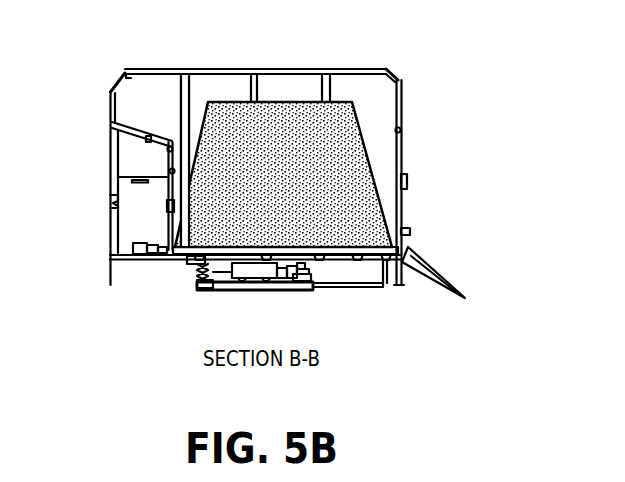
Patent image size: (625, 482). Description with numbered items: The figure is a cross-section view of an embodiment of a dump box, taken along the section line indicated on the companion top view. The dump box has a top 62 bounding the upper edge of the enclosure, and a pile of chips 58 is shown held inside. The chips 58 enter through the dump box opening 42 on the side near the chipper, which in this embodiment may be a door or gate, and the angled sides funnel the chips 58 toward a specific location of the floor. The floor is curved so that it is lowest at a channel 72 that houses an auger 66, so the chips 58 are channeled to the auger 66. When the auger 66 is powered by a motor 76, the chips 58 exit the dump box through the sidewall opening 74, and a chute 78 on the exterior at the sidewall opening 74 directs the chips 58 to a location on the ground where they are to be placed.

The dump box opening 42 is at (104, 197).
The chips 58 is at (350, 166).
The top 62 is at (362, 68).
The auger 66 is at (341, 261).
The channel 72 is at (182, 262).
The sidewall opening 74 is at (428, 240).
The motor 76 is at (145, 262).
The chute 78 is at (429, 270).